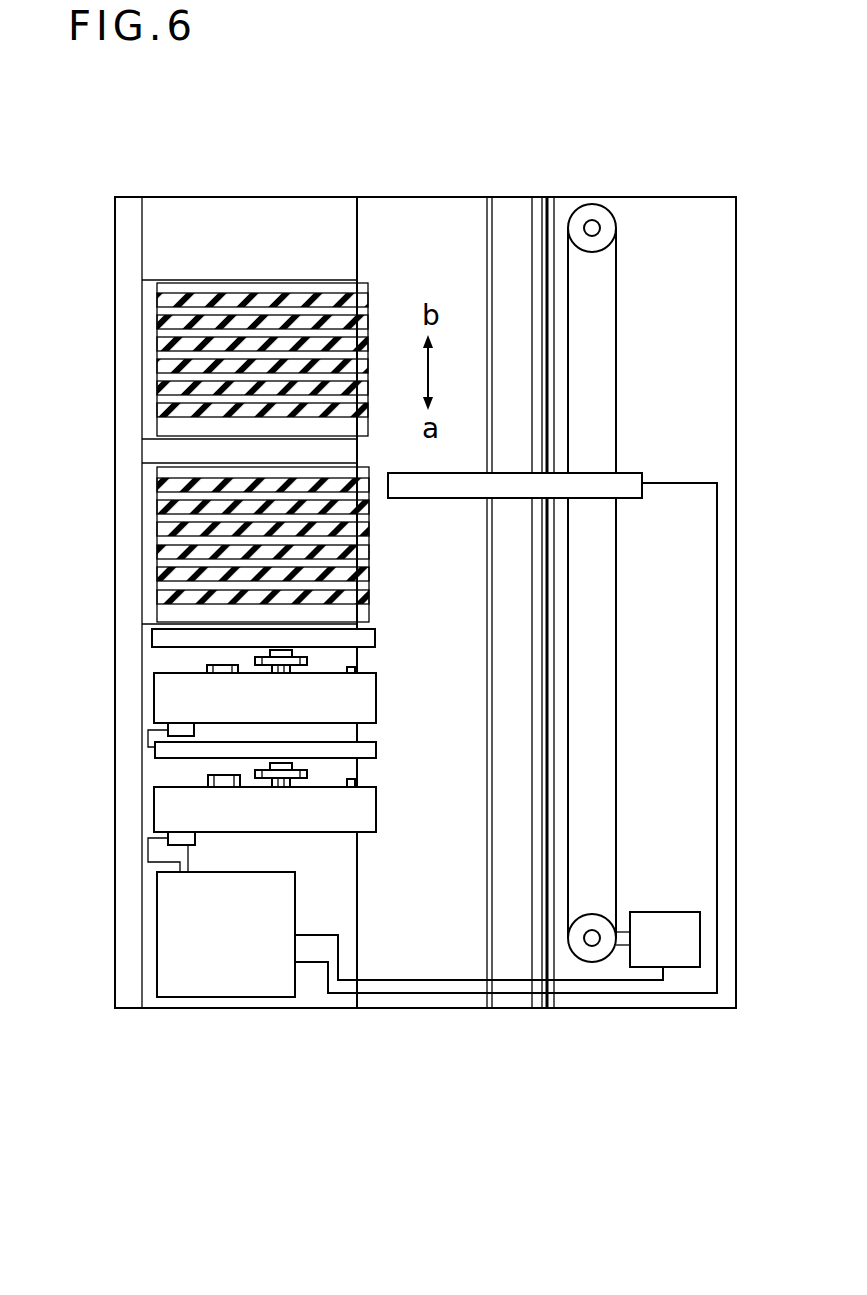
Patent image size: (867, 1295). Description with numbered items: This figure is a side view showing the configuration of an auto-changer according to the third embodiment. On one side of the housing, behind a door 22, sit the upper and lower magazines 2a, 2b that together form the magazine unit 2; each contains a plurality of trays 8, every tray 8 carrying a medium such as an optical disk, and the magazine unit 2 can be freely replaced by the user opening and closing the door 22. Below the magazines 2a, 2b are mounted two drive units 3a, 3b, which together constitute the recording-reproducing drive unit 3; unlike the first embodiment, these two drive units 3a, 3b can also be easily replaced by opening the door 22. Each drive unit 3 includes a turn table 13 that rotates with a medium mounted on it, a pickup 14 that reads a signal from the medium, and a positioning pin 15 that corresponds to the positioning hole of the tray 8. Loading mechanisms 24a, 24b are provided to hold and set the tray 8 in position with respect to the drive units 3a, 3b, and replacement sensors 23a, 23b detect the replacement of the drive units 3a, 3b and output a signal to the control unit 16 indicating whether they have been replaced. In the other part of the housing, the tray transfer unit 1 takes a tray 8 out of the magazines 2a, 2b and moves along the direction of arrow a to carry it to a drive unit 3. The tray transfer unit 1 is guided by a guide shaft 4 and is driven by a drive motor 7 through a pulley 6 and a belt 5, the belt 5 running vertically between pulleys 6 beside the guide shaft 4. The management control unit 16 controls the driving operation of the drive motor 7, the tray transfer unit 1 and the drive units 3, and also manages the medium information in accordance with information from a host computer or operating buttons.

The tray transfer unit 1 is at (625, 482).
The magazine unit 2 is at (192, 452).
The upper magazine 2a is at (160, 336).
The lower magazine 2b is at (211, 522).
The drive unit 3 is at (265, 893).
The first drive unit 3a is at (233, 707).
The second drive unit 3b is at (212, 818).
The guide shaft 4 is at (522, 213).
The belt 5 is at (618, 367).
The pulley 6 is at (598, 213).
The drive motor 7 is at (690, 940).
The tray 8 is at (167, 530).
The turn table 13 is at (280, 653).
The pickup 14 is at (212, 672).
The positioning pin 15 is at (352, 667).
The management control unit 16 is at (168, 943).
The door 22 is at (113, 228).
The replacement sensor 23a is at (182, 728).
The replacement sensor 23b is at (170, 839).
The loading mechanism 24a is at (167, 636).
The loading mechanism 24b is at (157, 747).